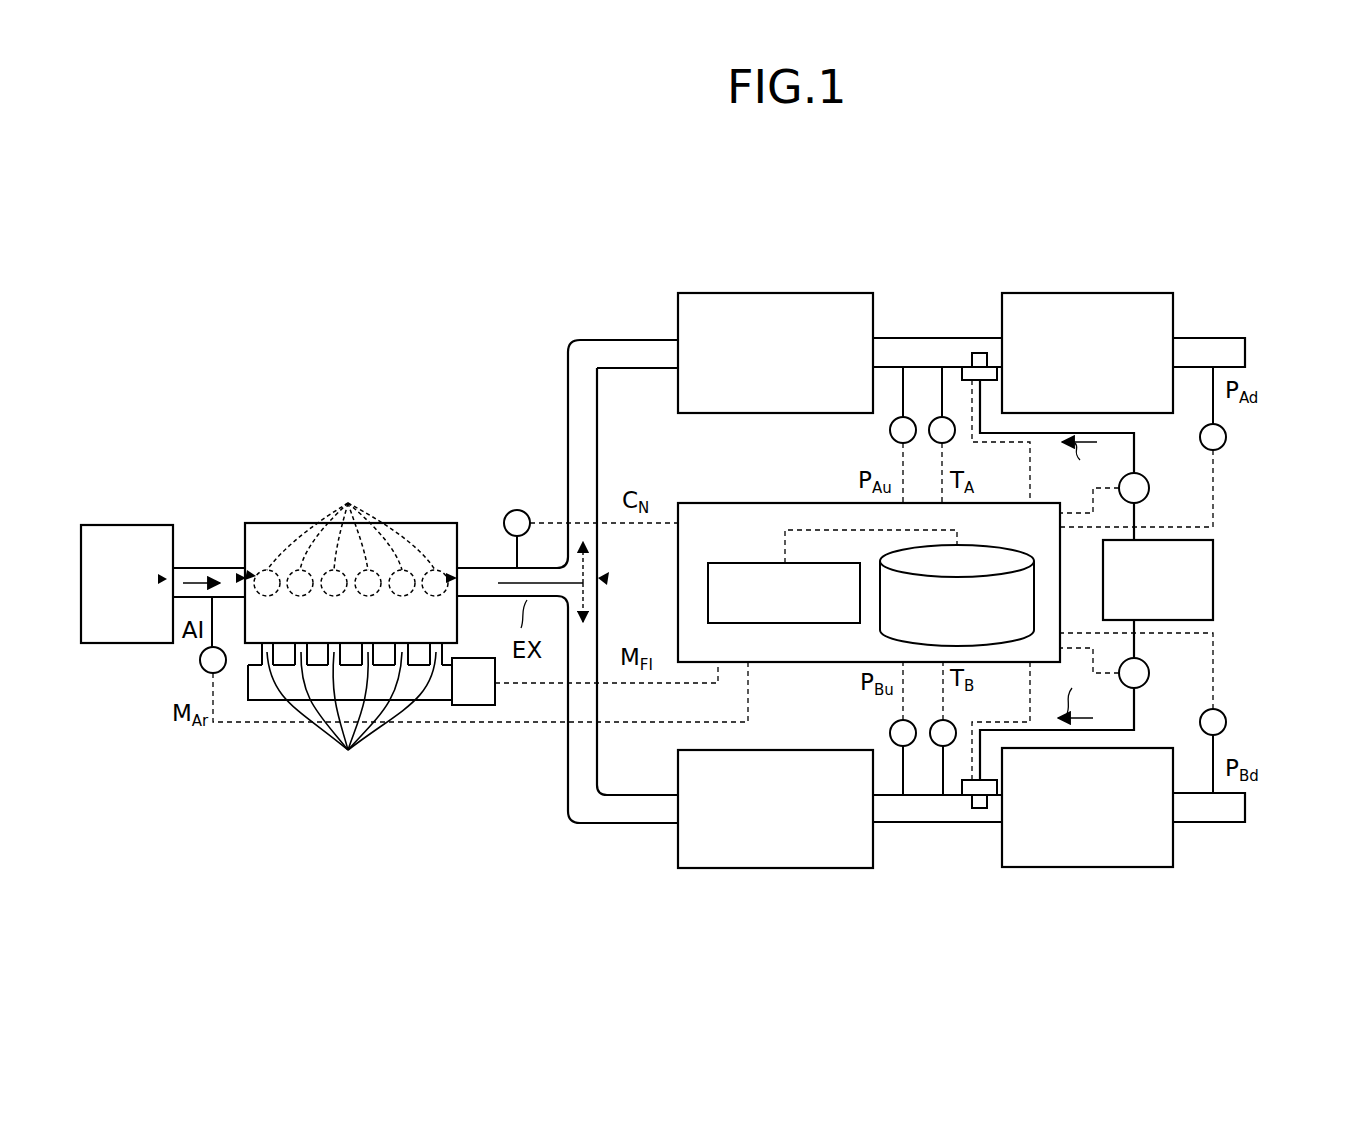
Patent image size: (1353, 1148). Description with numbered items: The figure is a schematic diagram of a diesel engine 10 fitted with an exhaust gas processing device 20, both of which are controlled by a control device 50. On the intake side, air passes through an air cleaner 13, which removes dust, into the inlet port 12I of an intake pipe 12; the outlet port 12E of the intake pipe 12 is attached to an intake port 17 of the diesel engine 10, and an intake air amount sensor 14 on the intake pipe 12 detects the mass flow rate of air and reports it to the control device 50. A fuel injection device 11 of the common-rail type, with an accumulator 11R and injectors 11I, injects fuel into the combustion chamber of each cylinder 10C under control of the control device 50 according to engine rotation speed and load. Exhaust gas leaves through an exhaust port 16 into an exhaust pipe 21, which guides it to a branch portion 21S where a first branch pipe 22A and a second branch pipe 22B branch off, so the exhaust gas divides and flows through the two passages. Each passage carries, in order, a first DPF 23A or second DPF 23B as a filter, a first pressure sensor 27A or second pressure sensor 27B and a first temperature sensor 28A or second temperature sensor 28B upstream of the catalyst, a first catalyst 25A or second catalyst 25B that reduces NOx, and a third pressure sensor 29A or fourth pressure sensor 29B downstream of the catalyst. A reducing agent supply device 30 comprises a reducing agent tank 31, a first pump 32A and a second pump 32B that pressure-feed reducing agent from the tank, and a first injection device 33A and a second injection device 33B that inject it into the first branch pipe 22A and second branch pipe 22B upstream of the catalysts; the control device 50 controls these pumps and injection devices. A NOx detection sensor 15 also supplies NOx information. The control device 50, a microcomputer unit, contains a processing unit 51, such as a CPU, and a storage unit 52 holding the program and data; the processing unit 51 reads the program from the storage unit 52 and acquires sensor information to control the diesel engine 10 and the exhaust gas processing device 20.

The diesel engine 10 is at (410, 523).
The cylinder 10C is at (348, 500).
The fuel injection device 11 is at (483, 734).
The injectors 11I is at (351, 716).
The accumulator 11R is at (437, 690).
The intake pipe 12 is at (205, 568).
The inlet port 12I is at (163, 575).
The outlet port 12E is at (240, 574).
The air cleaner 13 is at (120, 525).
The intake air amount sensor 14 is at (199, 663).
The NOx detection sensor 15 is at (519, 510).
The exhaust port 16 is at (451, 573).
The intake port 17 is at (254, 570).
The exhaust gas processing device 20 is at (1172, 220).
The exhaust pipe 21 is at (481, 565).
The branch portion 21S is at (607, 579).
The first branch pipe 22A is at (568, 405).
The second branch pipe 22B is at (568, 783).
The first DPF 23A is at (805, 293).
The second DPF 23B is at (808, 868).
The first catalyst 25A is at (1113, 293).
The second catalyst 25B is at (1143, 867).
The first pressure sensor 27A is at (890, 432).
The second pressure sensor 27B is at (890, 733).
The first temperature sensor 28A is at (932, 443).
The second temperature sensor 28B is at (931, 721).
The third pressure sensor 29A is at (1228, 437).
The fourth pressure sensor 29B is at (1228, 722).
The reducing agent supply device 30 is at (1252, 543).
The reducing agent tank 31 is at (1215, 578).
The first pump 32A is at (1150, 488).
The second pump 32B is at (1150, 673).
The first injection device 33A is at (980, 353).
The second injection device 33B is at (977, 808).
The control device 50 is at (869, 563).
The processing unit 51 is at (722, 563).
The storage unit 52 is at (995, 550).